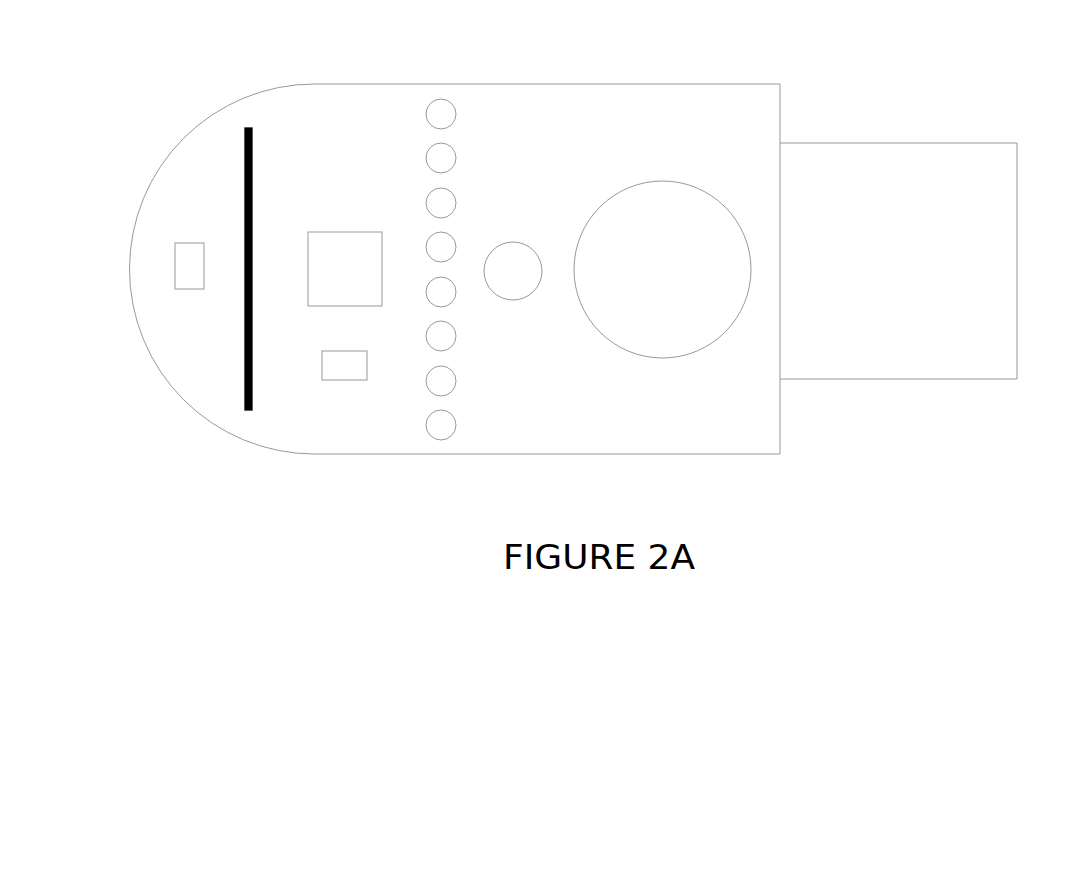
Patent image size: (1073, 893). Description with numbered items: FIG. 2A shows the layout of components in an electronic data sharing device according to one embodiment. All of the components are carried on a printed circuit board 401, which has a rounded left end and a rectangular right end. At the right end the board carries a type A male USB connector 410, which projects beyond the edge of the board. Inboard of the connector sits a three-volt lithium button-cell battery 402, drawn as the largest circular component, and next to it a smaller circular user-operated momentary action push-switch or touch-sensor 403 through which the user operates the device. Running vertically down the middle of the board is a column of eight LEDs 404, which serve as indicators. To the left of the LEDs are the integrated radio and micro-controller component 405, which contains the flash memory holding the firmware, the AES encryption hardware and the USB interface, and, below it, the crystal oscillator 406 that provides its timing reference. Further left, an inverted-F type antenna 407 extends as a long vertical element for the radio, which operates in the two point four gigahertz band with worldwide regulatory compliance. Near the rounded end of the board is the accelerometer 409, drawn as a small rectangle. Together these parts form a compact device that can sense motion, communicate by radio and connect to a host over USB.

The printed circuit board 401 is at (455, 269).
The lithium button-cell battery 402 is at (662, 269).
The user-operated momentary action push-switch or touch-sensor 403 is at (513, 271).
The LEDs 404 is at (441, 203).
The integrated radio and micro-controller component 405 is at (345, 269).
The crystal oscillator 406 is at (344, 365).
The inverted-F type antenna 407 is at (263, 257).
The accelerometer 409 is at (188, 267).
The type A male USB connector 410 is at (898, 261).